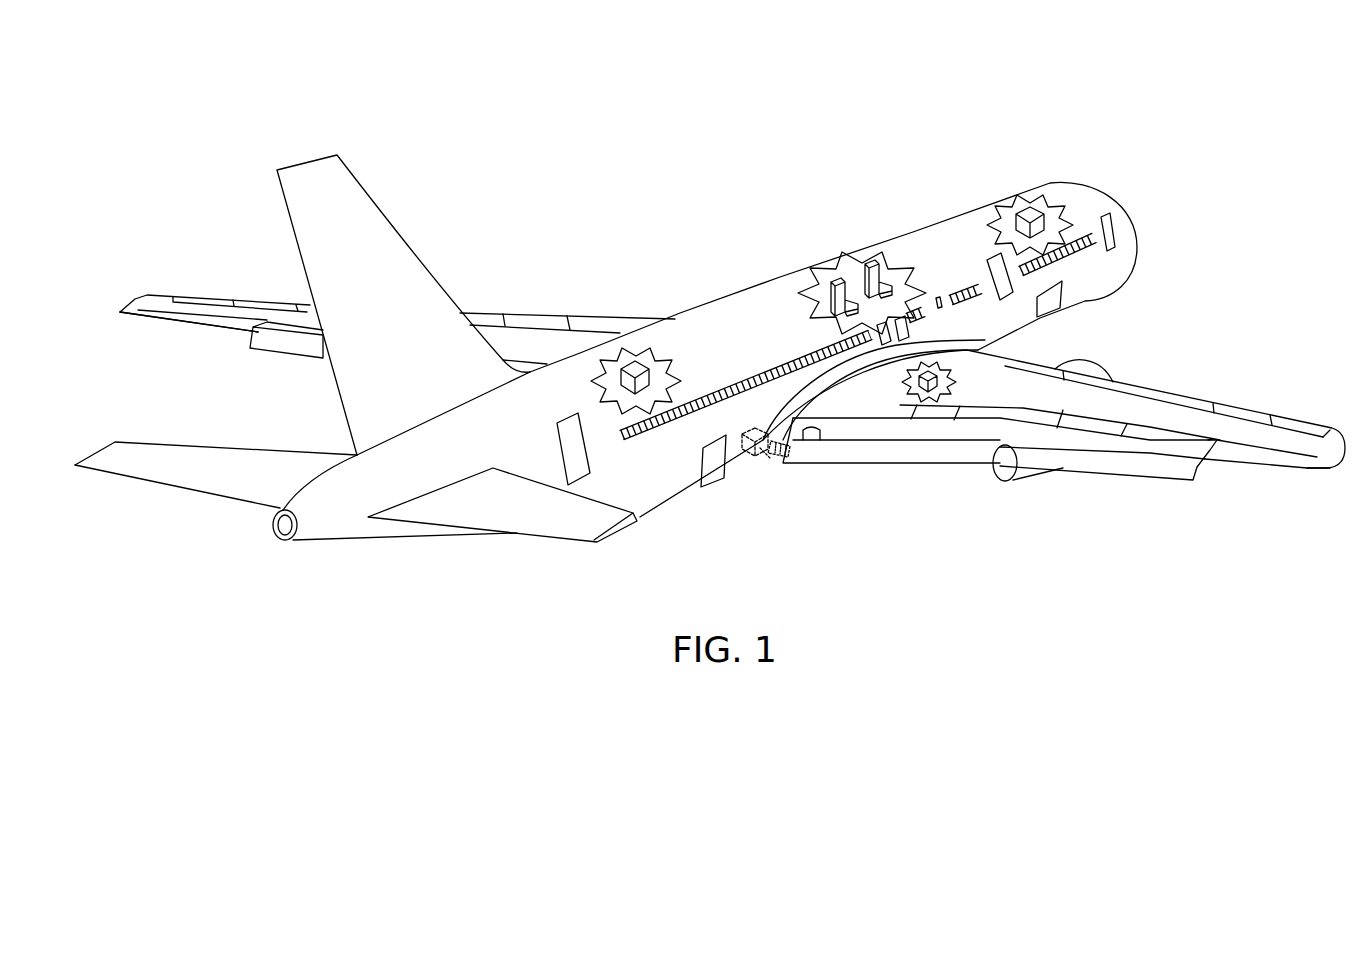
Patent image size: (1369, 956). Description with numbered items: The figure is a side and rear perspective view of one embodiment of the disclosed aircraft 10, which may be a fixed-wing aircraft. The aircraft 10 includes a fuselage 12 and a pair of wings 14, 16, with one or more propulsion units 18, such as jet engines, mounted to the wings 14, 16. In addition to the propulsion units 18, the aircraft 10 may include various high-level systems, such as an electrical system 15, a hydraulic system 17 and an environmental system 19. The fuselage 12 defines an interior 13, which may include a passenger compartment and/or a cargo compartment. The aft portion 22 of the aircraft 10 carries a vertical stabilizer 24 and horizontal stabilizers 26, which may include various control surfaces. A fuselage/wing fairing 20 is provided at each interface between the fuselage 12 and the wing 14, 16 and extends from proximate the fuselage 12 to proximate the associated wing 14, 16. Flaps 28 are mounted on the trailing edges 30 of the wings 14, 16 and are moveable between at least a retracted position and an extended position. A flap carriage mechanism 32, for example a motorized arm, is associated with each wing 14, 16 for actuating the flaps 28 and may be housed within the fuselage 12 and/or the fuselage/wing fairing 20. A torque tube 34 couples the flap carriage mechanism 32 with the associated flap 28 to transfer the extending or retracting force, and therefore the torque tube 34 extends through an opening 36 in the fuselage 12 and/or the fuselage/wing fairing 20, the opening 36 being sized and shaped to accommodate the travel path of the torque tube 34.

The aircraft 10 is at (653, 168).
The fuselage 12 is at (752, 288).
The interior 13 is at (887, 258).
The wing 14 is at (1017, 388).
The electrical system 15 is at (1028, 210).
The wing 16 is at (523, 337).
The hydraulic system 17 is at (940, 383).
The propulsion unit 18 is at (1097, 377).
The environmental system 19 is at (637, 362).
The fuselage/wing fairing 20 is at (830, 397).
The aft portion 22 is at (337, 567).
The vertical stabilizer 24 is at (377, 207).
The horizontal stabilizer 26 is at (187, 490).
The flap 28 is at (925, 460).
The trailing edge 30 is at (1263, 467).
The flap carriage mechanism 32 is at (752, 426).
The torque tube 34 is at (775, 462).
The opening 36 is at (768, 462).